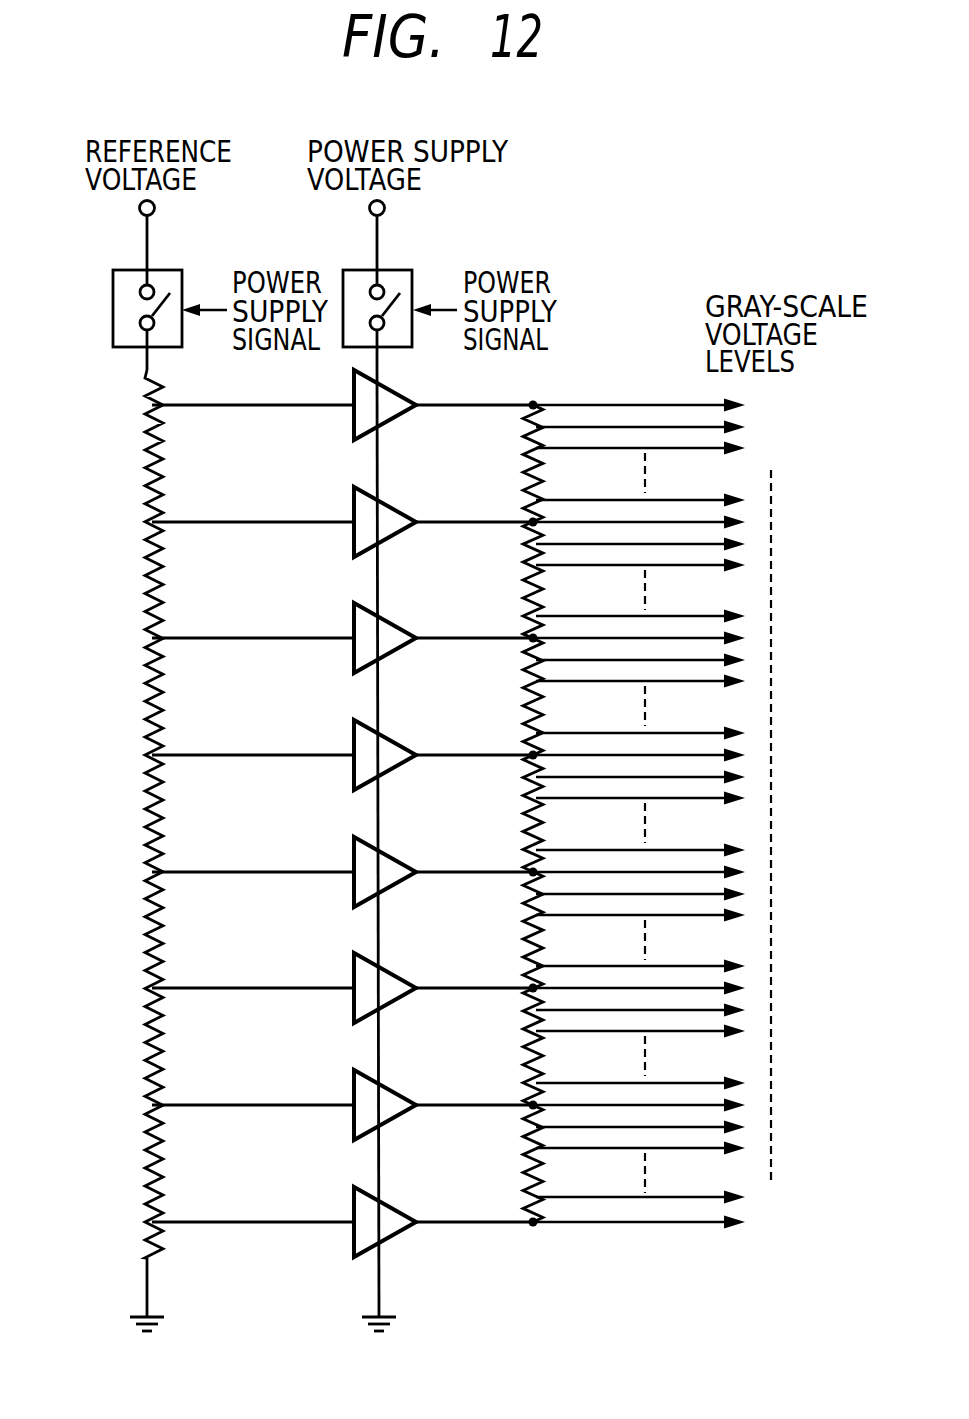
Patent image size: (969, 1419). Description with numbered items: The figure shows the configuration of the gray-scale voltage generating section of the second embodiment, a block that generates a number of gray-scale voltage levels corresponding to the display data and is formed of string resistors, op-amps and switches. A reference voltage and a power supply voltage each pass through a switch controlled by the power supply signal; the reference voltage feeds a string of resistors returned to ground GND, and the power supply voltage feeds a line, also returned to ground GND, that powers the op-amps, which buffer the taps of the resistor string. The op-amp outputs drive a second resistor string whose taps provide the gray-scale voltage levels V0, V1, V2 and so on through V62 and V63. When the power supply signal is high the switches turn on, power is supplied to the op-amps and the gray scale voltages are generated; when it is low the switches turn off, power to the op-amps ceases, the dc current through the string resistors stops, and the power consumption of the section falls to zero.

The gray-scale voltage level V0 is at (659, 402).
The gray-scale voltage level V1 is at (659, 426).
The gray-scale voltage level V2 is at (659, 450).
The gray-scale voltage level V62 is at (666, 1196).
The gray-scale voltage level V63 is at (666, 1221).
The ground GND is at (264, 1345).